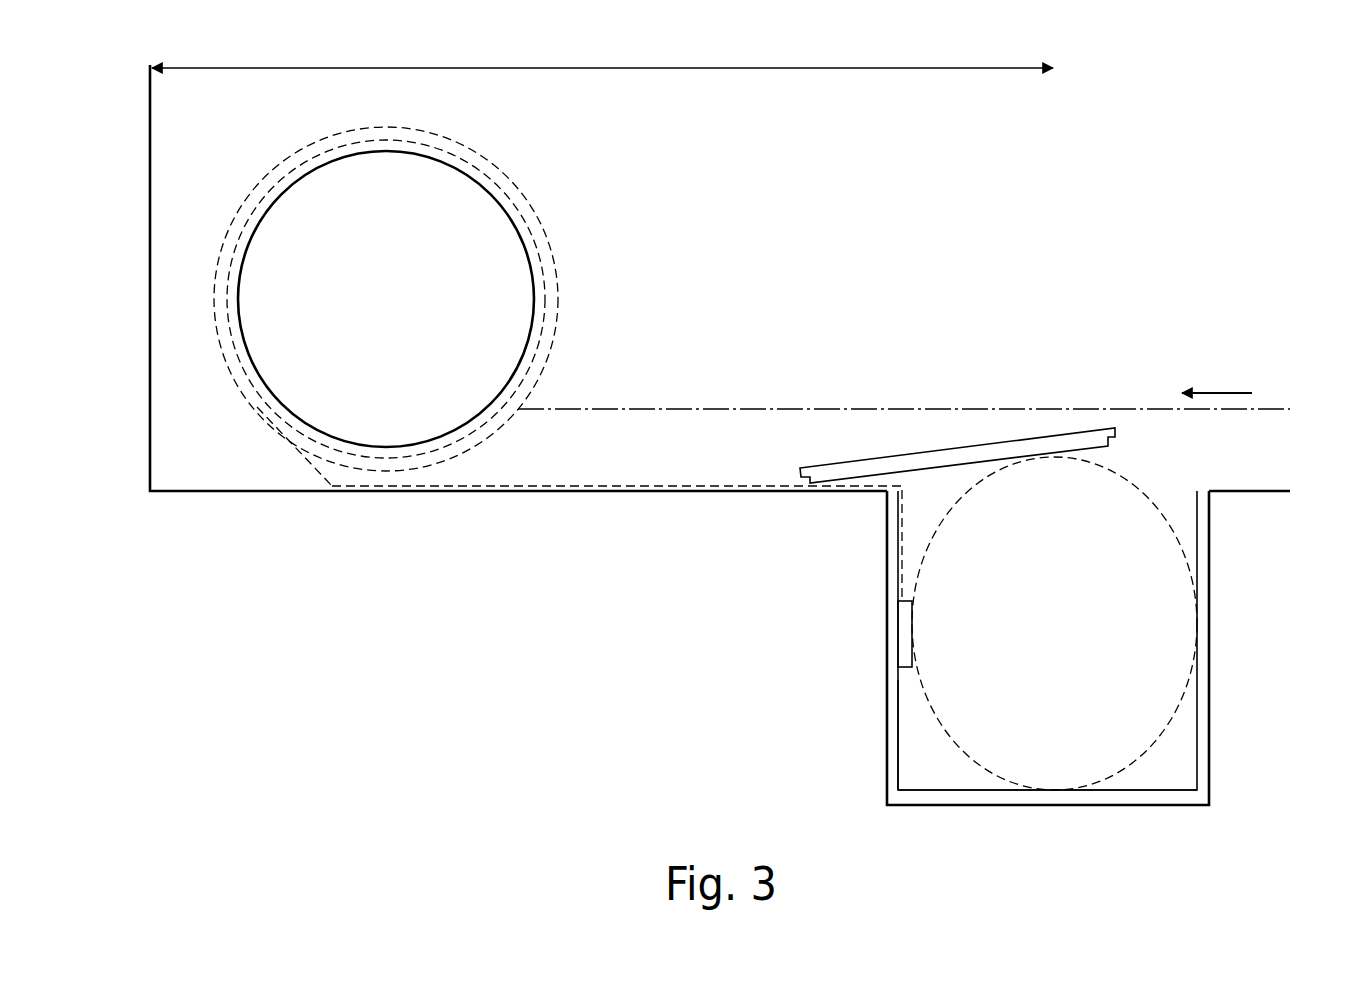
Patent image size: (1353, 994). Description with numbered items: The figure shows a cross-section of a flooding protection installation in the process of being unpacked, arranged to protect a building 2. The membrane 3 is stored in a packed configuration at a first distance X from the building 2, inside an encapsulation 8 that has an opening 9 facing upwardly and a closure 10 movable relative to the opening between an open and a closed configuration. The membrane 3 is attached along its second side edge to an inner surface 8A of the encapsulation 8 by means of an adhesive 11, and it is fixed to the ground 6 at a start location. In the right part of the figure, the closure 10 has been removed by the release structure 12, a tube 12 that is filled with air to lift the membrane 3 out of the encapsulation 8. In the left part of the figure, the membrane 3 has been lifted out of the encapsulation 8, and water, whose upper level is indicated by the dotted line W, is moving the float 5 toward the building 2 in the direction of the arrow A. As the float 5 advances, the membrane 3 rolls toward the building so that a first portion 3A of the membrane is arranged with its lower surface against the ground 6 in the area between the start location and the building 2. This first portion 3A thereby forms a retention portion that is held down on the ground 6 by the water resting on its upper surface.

The building 2 is at (128, 277).
The membrane 3 is at (541, 226).
The first portion of the membrane 3A is at (591, 492).
The float 5 is at (470, 204).
The ground 6 is at (841, 711).
The encapsulation 8 is at (1209, 727).
The inner surface of the encapsulation 8A is at (904, 737).
The opening 9 is at (1163, 486).
The closure 10 is at (952, 462).
The adhesive 11 is at (906, 637).
The release structure 12 is at (1048, 778).
The upper water level W is at (664, 409).
The first distance X is at (602, 52).
The arrow indicating float movement A is at (1218, 393).